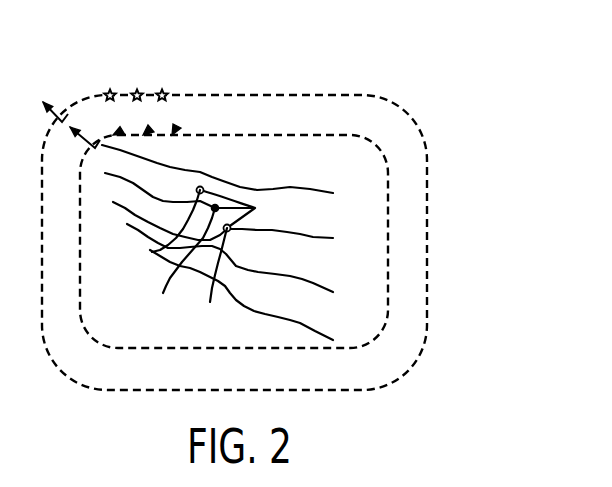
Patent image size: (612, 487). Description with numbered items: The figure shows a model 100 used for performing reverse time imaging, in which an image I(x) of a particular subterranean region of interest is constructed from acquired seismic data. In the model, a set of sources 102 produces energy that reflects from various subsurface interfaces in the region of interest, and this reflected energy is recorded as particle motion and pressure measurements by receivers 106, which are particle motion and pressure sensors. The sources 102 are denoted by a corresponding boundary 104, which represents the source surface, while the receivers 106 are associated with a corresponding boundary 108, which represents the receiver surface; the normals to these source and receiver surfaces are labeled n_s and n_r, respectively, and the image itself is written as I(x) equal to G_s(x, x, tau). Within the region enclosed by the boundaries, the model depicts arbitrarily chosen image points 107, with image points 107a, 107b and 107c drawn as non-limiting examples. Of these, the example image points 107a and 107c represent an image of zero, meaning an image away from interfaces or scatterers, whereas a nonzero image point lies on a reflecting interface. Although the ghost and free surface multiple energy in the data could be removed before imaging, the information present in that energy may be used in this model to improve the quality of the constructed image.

The seismic imaging system / model 100 is at (500, 68).
The sources 102 is at (162, 93).
The boundary 104 is at (208, 94).
The receivers 106 is at (174, 132).
The image points 107 is at (255, 208).
The image point 107a is at (152, 252).
The image point 107b is at (172, 263).
The image point 107c is at (208, 278).
The boundary 108 is at (388, 240).